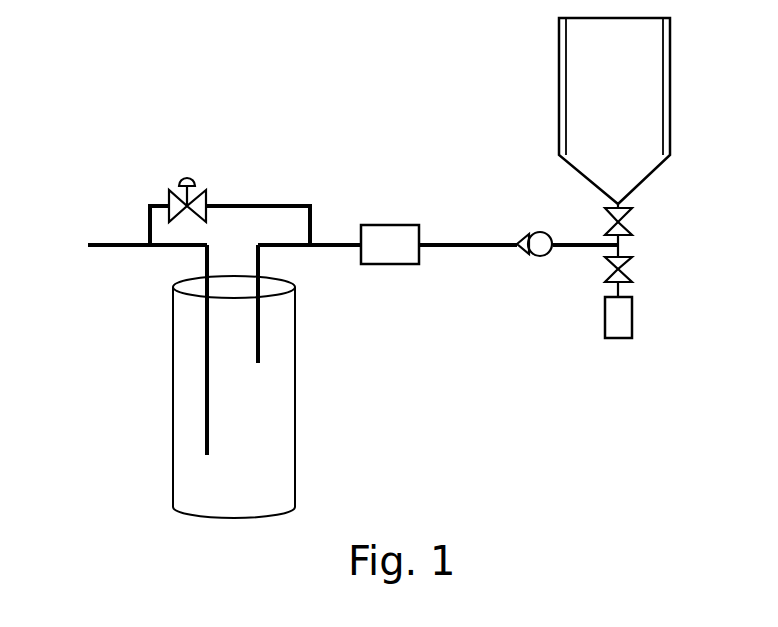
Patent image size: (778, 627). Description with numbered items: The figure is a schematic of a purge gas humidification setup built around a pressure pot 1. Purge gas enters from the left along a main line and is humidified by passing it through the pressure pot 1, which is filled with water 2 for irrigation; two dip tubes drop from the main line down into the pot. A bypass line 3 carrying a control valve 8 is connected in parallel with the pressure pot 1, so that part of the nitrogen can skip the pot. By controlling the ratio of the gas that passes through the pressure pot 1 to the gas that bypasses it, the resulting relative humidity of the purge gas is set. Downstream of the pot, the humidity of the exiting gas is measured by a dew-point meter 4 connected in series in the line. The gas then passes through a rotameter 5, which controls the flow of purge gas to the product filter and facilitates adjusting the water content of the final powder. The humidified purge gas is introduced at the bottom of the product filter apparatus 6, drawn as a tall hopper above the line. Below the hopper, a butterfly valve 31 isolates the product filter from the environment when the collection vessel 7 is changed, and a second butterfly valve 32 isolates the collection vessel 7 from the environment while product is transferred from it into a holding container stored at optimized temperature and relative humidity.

The pressure pot 1 is at (295, 362).
The water 2 is at (242, 476).
The bypass line 3 is at (272, 205).
The dew-point meter 4 is at (382, 258).
The rotameter 5 is at (540, 232).
The product filter apparatus 6 is at (606, 135).
The collection vessel 7 is at (611, 330).
The control valve 8 is at (187, 183).
The butterfly valve 31 is at (631, 216).
The butterfly valve 32 is at (631, 263).